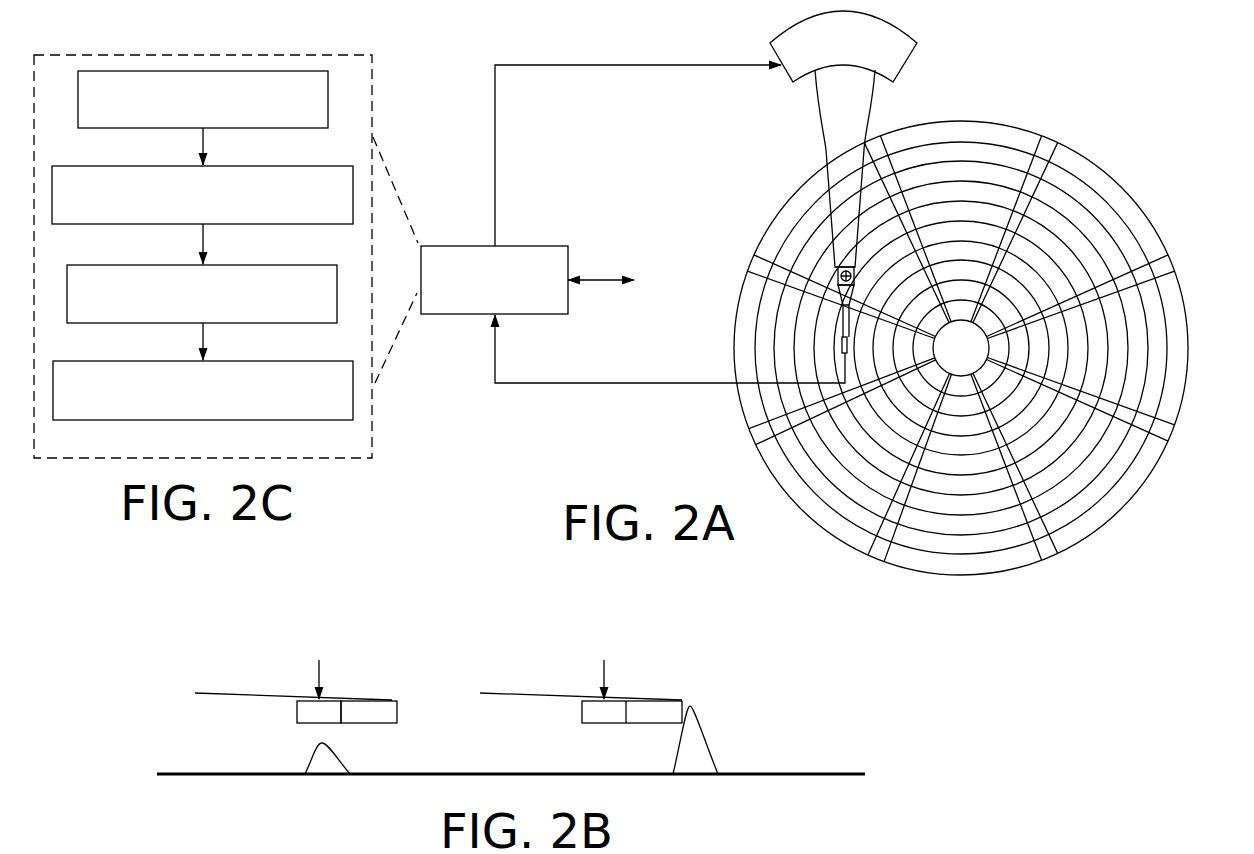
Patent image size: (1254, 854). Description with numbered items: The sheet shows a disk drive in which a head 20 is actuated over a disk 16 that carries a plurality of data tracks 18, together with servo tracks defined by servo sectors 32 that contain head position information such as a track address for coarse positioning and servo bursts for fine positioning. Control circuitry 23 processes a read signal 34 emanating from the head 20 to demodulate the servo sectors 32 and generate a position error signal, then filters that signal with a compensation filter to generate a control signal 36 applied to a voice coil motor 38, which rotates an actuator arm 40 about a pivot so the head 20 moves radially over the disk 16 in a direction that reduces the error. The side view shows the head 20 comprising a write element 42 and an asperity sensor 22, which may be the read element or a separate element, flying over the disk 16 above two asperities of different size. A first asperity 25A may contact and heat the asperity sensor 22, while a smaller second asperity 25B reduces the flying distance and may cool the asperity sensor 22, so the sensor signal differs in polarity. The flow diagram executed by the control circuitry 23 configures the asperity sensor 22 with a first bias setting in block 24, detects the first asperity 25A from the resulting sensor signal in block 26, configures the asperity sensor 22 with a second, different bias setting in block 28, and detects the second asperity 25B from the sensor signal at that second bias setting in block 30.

In FIG. 2A, the disk 16 is at (1117, 177).
In FIG. 2B, the disk 16 is at (845, 769).
In FIG. 2A, the data tracks 18 is at (965, 152).
In FIG. 2A, the head 20 is at (851, 345).
In FIG. 2B, the head 20 is at (413, 677).
In FIG. 2B, the asperity sensor 22 is at (295, 714).
In FIG. 2A, the control circuitry 23 is at (536, 246).
In FIG. 2C, the configure asperity sensor with first bias setting block 24 is at (278, 128).
In FIG. 2B, the first asperity 25A is at (717, 746).
In FIG. 2B, the second asperity 25B is at (351, 757).
In FIG. 2C, the detect first asperity block 26 is at (303, 224).
In FIG. 2C, the configure asperity sensor with second bias setting block 28 is at (298, 323).
In FIG. 2C, the detect second asperity block 30 is at (303, 420).
In FIG. 2A, the servo sectors 32 is at (1056, 148).
In FIG. 2A, the read signal 34 is at (622, 383).
In FIG. 2A, the control signal 36 is at (495, 148).
In FIG. 2A, the voice coil motor 38 is at (795, 82).
In FIG. 2A, the actuator arm 40 is at (826, 147).
In FIG. 2B, the write element 42 is at (401, 710).